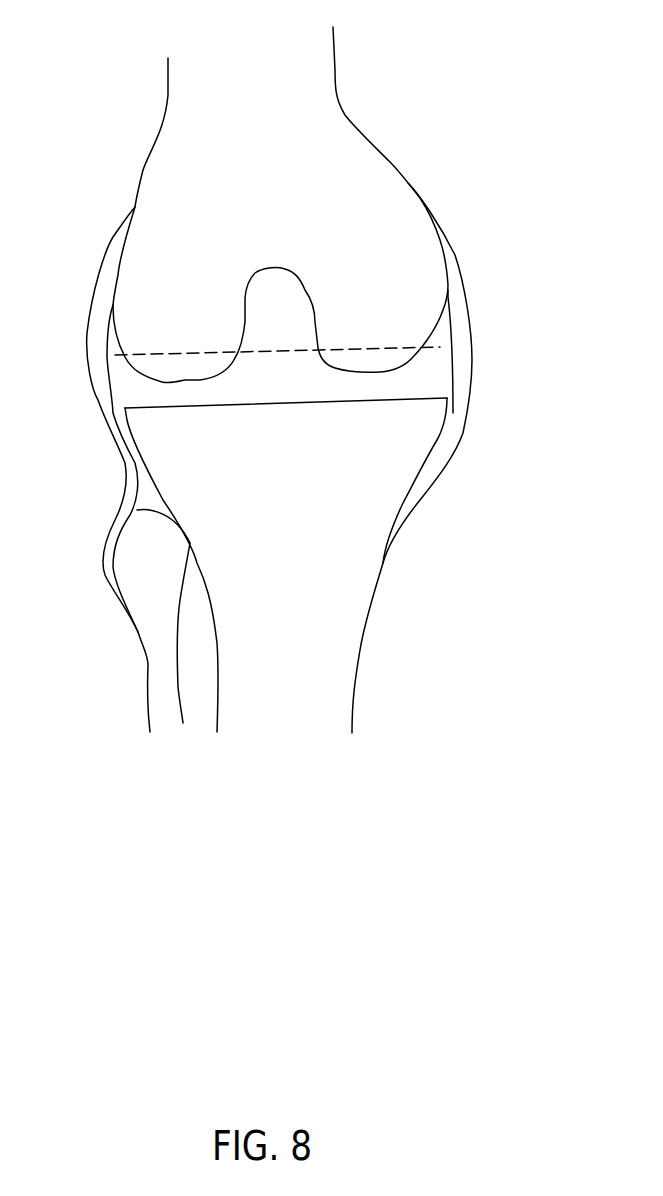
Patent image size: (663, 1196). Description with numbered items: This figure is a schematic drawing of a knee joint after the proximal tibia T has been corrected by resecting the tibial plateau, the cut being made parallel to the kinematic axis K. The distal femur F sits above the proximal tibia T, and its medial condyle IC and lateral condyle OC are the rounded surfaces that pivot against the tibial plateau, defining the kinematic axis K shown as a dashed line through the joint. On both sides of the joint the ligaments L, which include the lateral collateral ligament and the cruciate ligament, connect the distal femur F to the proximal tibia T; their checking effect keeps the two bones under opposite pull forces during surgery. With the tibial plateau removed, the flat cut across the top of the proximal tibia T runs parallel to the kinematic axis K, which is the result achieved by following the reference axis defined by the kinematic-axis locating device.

The distal femur F is at (340, 153).
The kinematic axis K is at (353, 350).
The lateral condyle OC is at (423, 270).
The medial condyle IC is at (148, 277).
The ligaments L is at (465, 370).
The proximal tibia T is at (377, 470).